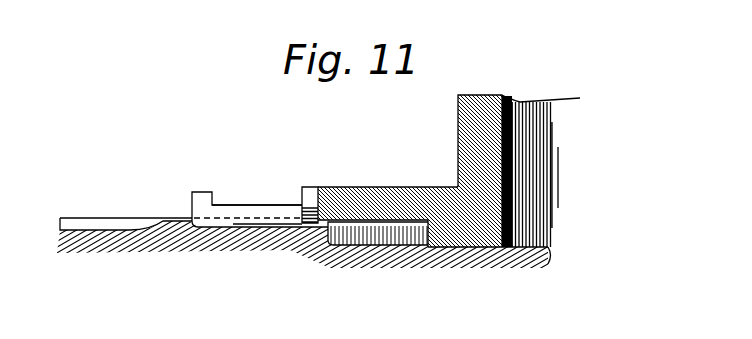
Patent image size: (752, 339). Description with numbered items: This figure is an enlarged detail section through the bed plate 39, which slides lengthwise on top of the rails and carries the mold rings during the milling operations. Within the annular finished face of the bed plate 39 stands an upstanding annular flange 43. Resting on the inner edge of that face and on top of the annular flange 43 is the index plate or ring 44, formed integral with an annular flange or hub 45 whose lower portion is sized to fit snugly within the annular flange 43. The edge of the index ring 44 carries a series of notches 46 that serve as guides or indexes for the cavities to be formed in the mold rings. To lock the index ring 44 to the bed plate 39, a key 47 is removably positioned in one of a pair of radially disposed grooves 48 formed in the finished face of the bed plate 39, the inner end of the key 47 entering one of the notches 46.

The bed plate 39 is at (237, 229).
The upstanding annular flange 43 is at (448, 230).
The index plate or ring 44 is at (387, 195).
The annular flange or hub 45 is at (490, 95).
The notch 46 is at (312, 190).
The key 47 is at (245, 210).
The radially disposed groove 48 is at (168, 218).